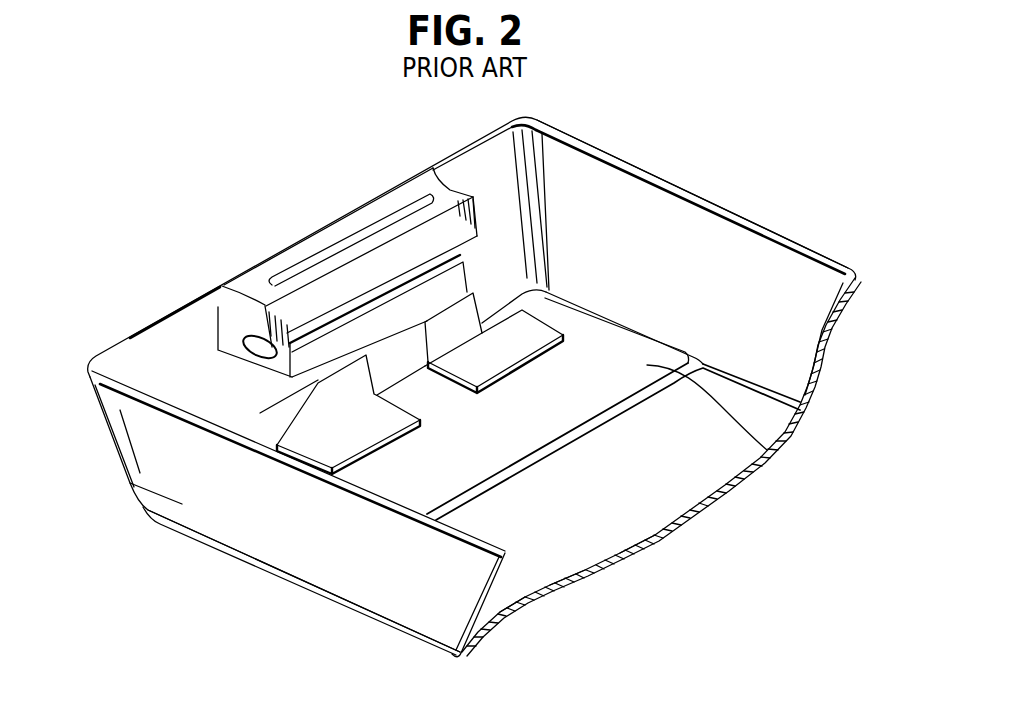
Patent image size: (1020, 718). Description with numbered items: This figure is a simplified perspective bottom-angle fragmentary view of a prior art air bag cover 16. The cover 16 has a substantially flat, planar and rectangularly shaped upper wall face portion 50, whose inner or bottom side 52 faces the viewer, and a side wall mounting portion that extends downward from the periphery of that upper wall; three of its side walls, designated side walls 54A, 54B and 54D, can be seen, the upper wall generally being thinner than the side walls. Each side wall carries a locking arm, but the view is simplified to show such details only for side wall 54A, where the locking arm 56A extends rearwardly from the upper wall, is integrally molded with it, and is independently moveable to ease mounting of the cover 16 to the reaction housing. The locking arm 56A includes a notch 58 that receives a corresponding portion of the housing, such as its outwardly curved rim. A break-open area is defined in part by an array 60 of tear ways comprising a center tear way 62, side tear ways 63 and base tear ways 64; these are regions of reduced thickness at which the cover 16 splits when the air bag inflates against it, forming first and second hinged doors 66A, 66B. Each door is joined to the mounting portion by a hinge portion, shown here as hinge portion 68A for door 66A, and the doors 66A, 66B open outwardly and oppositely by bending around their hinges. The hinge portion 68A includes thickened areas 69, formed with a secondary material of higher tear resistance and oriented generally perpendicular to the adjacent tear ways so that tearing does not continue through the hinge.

The cover 16 is at (700, 171).
The upper wall face portion 50 is at (517, 542).
The inner or bottom side 52 is at (563, 517).
The side wall 54A is at (133, 362).
The side wall 54B is at (572, 160).
The side wall 54D is at (236, 530).
The locking arm 56A is at (420, 238).
The notch 58 is at (245, 337).
The array of tear ways 60 is at (700, 352).
The center tear way 62 is at (630, 407).
The side tear way 63 is at (580, 300).
The base tear way 64 is at (488, 307).
The first hinged door 66A is at (767, 448).
The second hinged door 66B is at (643, 507).
The hinge portion 68A is at (400, 367).
The thickened area 69 is at (361, 439).